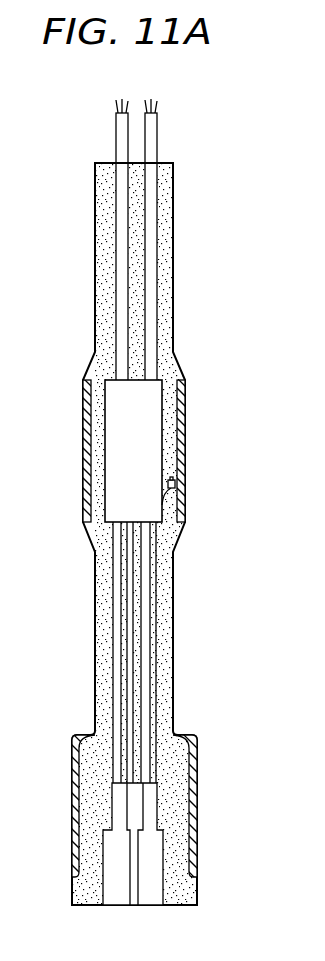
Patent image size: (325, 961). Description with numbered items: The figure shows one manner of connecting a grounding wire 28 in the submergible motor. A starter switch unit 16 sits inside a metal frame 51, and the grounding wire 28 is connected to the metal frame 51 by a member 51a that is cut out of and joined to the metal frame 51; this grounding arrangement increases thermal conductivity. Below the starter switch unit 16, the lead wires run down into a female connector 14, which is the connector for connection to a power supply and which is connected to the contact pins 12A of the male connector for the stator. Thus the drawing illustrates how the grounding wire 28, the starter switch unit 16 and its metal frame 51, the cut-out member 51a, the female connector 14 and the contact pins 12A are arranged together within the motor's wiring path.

The starter switch unit 16 is at (110, 410).
The metal frame 51 is at (185, 397).
The member cut out of the metal frame 51a is at (176, 483).
The grounding wire 28 is at (168, 500).
The female connector 14 is at (197, 746).
The contact pins 12A is at (160, 872).